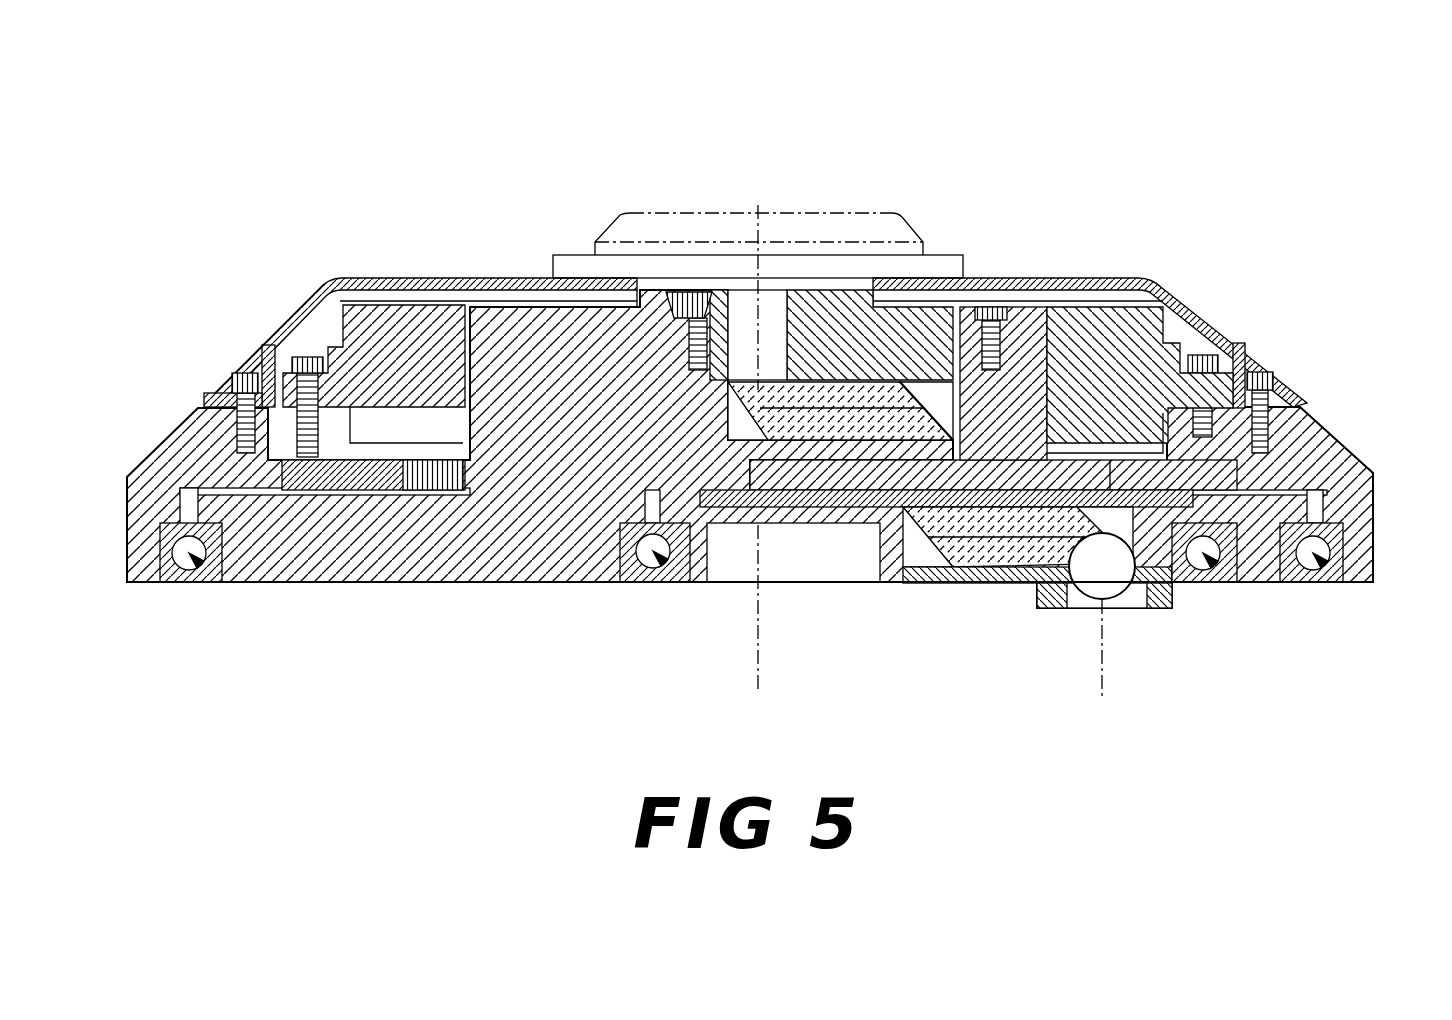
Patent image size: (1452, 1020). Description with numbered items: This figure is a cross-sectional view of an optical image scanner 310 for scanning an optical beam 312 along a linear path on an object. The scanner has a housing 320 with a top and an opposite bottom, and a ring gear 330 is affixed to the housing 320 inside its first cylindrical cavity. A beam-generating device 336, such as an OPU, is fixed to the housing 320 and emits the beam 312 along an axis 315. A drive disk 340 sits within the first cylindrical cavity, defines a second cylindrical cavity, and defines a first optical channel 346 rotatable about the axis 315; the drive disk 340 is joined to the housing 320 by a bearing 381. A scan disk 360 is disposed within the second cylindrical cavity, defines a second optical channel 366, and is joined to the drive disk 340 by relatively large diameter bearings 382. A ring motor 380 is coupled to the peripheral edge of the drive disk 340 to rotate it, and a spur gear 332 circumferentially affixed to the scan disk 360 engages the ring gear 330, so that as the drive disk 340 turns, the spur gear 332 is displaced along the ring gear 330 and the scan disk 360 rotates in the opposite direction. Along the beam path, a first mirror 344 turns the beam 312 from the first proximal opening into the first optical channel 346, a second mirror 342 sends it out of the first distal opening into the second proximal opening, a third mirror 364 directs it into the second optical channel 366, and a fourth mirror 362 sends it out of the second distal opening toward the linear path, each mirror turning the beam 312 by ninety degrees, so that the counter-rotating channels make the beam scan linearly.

The optical image scanner 310 is at (340, 134).
The optical beam 312 is at (775, 295).
The axis 315 is at (760, 672).
The housing 320 is at (1347, 440).
The ring gear 330 is at (1143, 460).
The spur gear 332 is at (1030, 477).
The beam-generating device 336 is at (800, 216).
The drive disk 340 is at (556, 540).
The second mirror 342 is at (933, 387).
The first mirror 344 is at (728, 420).
The first optical channel 346 is at (837, 387).
The scan disk 360 is at (790, 505).
The fourth mirror 362 is at (1143, 540).
The third mirror 364 is at (930, 550).
The second optical channel 366 is at (1047, 540).
The ring motor 380 is at (415, 325).
The bearing 381 is at (193, 560).
The bearings 382 is at (655, 560).